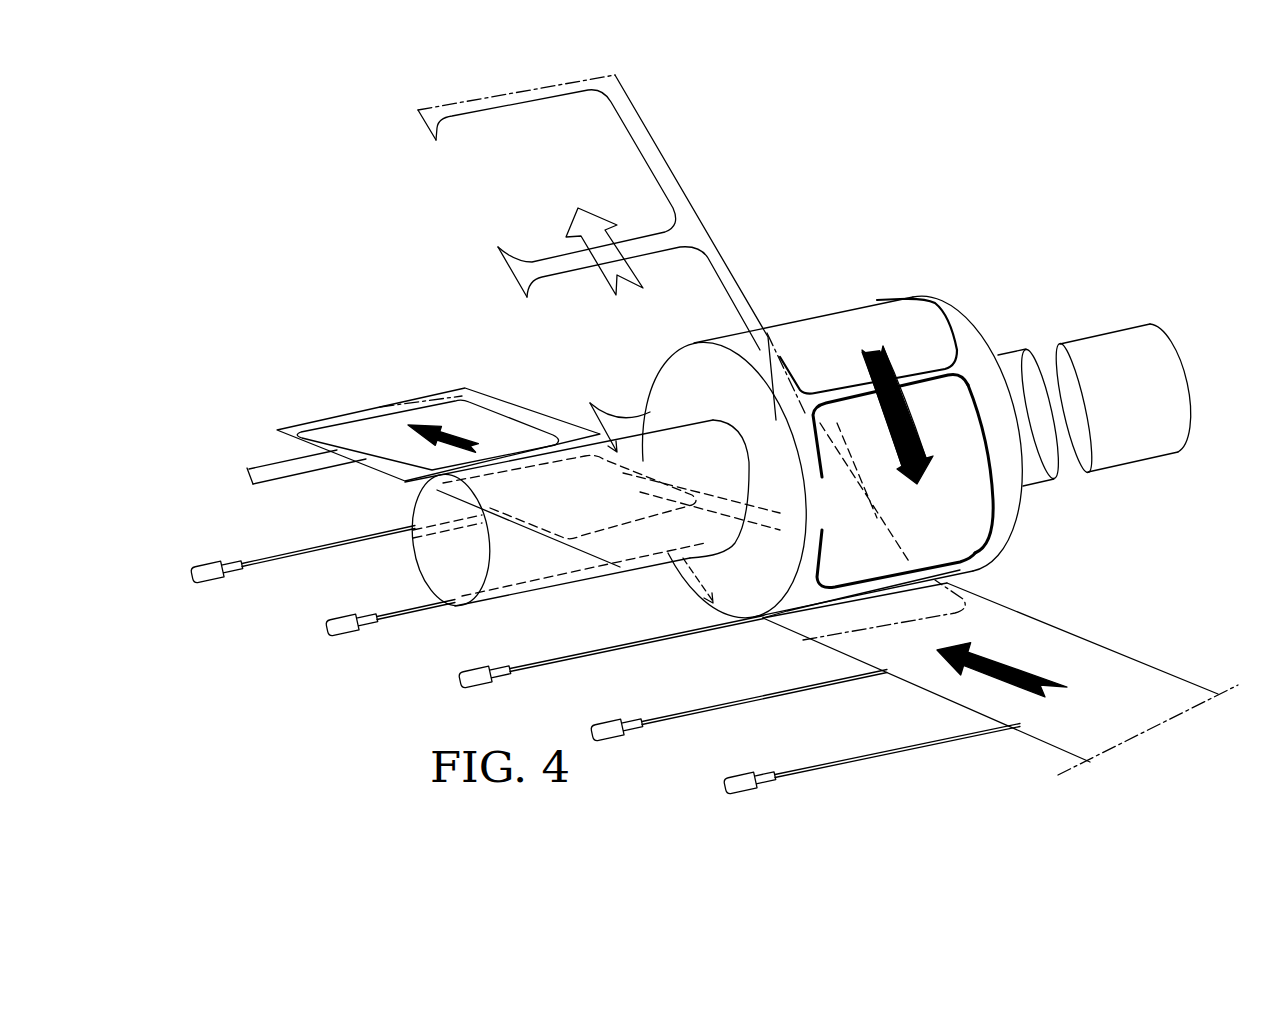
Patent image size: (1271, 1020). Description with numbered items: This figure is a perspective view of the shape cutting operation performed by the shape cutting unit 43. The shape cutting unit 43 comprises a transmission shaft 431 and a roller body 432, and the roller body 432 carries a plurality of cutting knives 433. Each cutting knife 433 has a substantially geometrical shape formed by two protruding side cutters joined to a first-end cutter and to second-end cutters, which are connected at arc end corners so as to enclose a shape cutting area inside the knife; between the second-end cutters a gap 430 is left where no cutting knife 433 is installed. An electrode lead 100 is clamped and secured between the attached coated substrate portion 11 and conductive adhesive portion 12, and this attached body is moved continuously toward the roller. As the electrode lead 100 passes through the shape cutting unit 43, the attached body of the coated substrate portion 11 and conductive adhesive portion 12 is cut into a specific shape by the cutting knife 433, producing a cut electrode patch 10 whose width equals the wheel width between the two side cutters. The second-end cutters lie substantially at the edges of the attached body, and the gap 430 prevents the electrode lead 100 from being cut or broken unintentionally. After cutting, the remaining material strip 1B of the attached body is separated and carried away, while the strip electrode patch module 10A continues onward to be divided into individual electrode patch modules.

The remaining material strip 1B is at (660, 170).
The electrode patch 10 is at (368, 427).
The strip electrode patch module 10A is at (487, 399).
The electrode lead 100 is at (288, 473).
The gap 430 is at (798, 503).
The shape cutting unit 43 is at (868, 289).
The roller body 432 is at (998, 545).
The cutting knife 433 is at (995, 520).
The transmission shaft 431 is at (1160, 443).
The coated substrate portion 11 is at (841, 632).
The conductive adhesive portion 12 is at (884, 610).